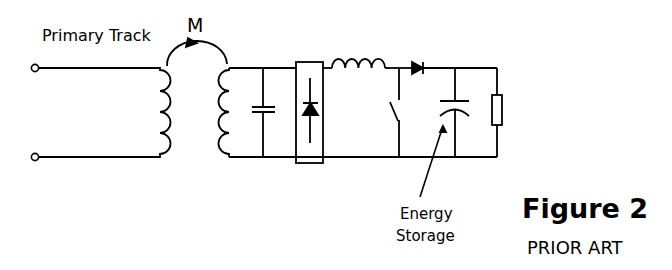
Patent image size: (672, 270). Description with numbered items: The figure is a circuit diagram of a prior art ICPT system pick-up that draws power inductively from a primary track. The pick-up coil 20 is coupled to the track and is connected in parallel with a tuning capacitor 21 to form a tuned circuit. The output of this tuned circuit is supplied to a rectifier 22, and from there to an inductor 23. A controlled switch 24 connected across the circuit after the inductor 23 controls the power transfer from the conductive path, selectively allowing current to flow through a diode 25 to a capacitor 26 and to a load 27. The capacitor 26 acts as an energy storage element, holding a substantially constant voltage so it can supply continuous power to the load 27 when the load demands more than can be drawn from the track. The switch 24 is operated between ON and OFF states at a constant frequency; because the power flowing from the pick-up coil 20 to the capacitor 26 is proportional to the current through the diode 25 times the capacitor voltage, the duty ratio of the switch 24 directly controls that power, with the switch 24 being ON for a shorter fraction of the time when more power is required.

The pick-up coil 20 is at (212, 126).
The tuning capacitor 21 is at (269, 134).
The rectifier 22 is at (302, 56).
The inductor 23 is at (374, 58).
The controlled switch 24 is at (386, 110).
The diode 25 is at (419, 51).
The capacitor 26 is at (463, 86).
The load 27 is at (506, 134).